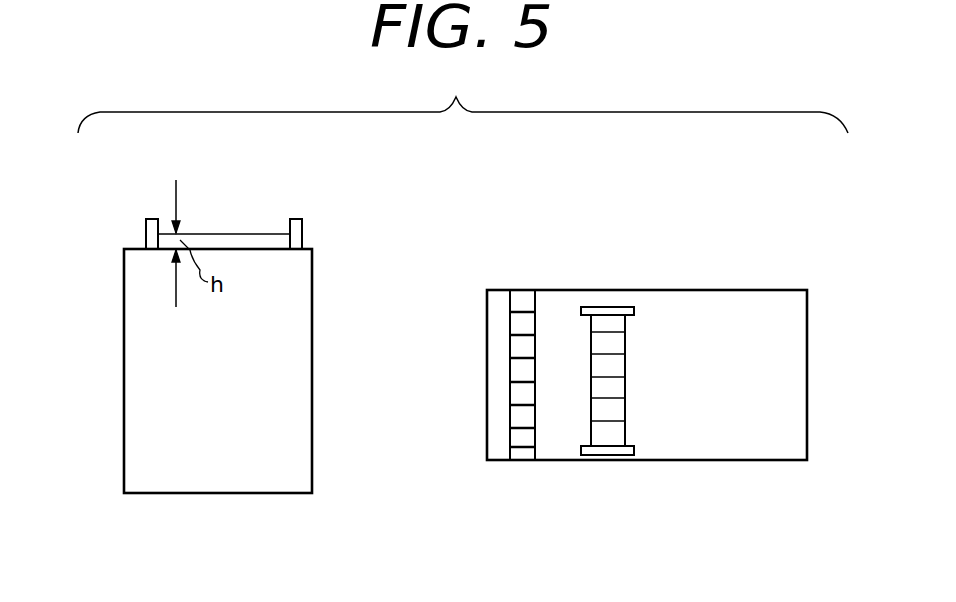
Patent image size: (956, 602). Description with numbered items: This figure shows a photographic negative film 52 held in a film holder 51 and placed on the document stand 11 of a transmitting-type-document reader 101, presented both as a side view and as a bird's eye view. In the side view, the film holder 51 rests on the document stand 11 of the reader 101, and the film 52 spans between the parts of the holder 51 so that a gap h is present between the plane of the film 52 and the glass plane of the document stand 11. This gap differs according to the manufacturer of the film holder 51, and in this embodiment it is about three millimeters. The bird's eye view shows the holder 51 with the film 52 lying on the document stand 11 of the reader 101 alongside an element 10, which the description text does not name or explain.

The light emitting element array 10 is at (525, 292).
The document stand 11 is at (130, 248).
The film holder 51 is at (150, 218).
The photographic negative film 52 is at (242, 234).
The transmitting-type-document reader 101 is at (312, 290).